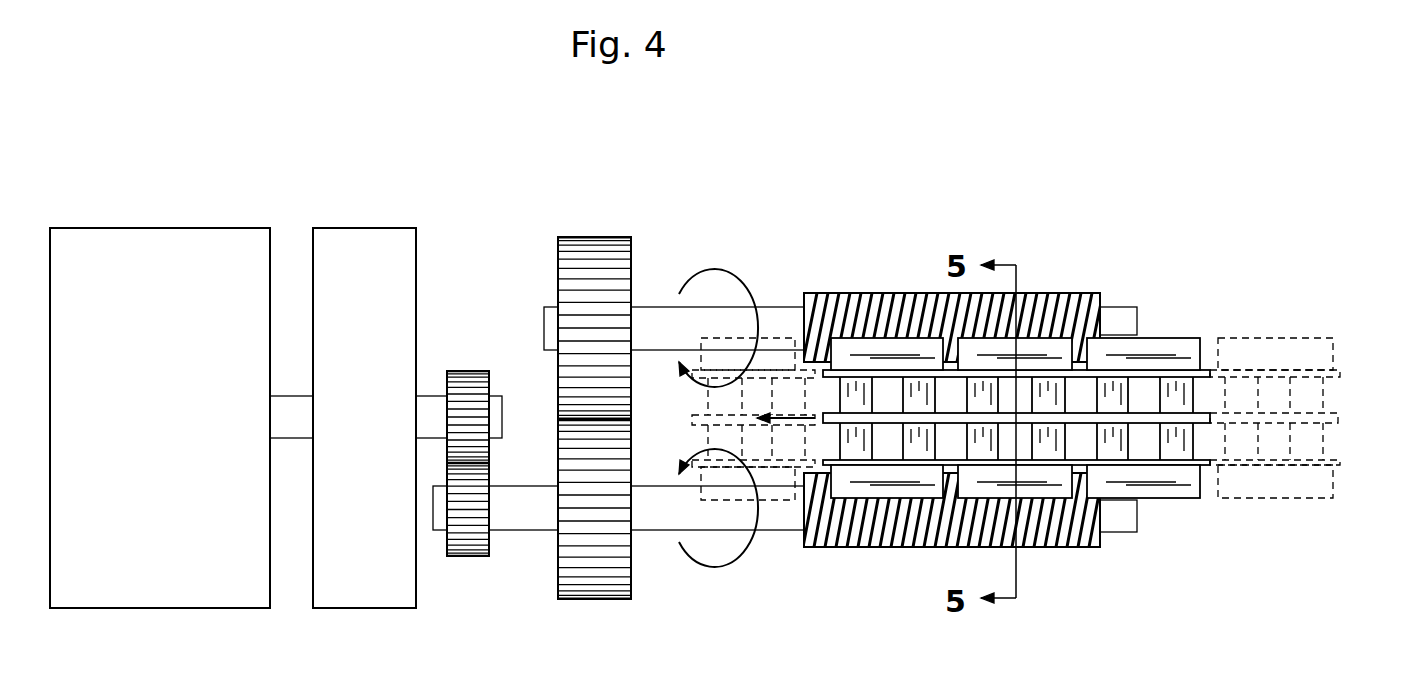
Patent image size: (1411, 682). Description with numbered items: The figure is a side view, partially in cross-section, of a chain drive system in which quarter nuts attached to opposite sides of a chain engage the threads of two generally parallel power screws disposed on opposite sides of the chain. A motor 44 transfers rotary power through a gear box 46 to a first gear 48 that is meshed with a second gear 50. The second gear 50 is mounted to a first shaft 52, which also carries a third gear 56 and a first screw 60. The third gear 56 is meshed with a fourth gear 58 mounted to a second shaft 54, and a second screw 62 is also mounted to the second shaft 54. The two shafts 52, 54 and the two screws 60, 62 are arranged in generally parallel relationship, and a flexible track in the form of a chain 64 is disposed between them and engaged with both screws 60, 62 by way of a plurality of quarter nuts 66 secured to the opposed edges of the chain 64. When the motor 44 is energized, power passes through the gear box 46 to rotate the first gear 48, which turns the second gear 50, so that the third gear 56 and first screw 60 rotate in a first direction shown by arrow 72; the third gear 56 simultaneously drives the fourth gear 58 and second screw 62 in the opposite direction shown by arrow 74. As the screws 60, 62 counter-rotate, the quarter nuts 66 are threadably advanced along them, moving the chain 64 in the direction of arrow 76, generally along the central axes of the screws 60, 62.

The motor 44 is at (148, 258).
The gear box 46 is at (348, 247).
The first gear 48 is at (457, 371).
The second gear 50 is at (472, 557).
The first shaft 52 is at (788, 516).
The second shaft 54 is at (648, 320).
The third gear 56 is at (594, 600).
The fourth gear 58 is at (592, 237).
The first screw 60 is at (1070, 548).
The second screw 62 is at (1090, 293).
The chain 64 is at (1308, 395).
The quarter nuts 66 is at (868, 348).
The arrow 72 is at (712, 568).
The arrow 74 is at (739, 275).
The arrow 76 is at (789, 418).